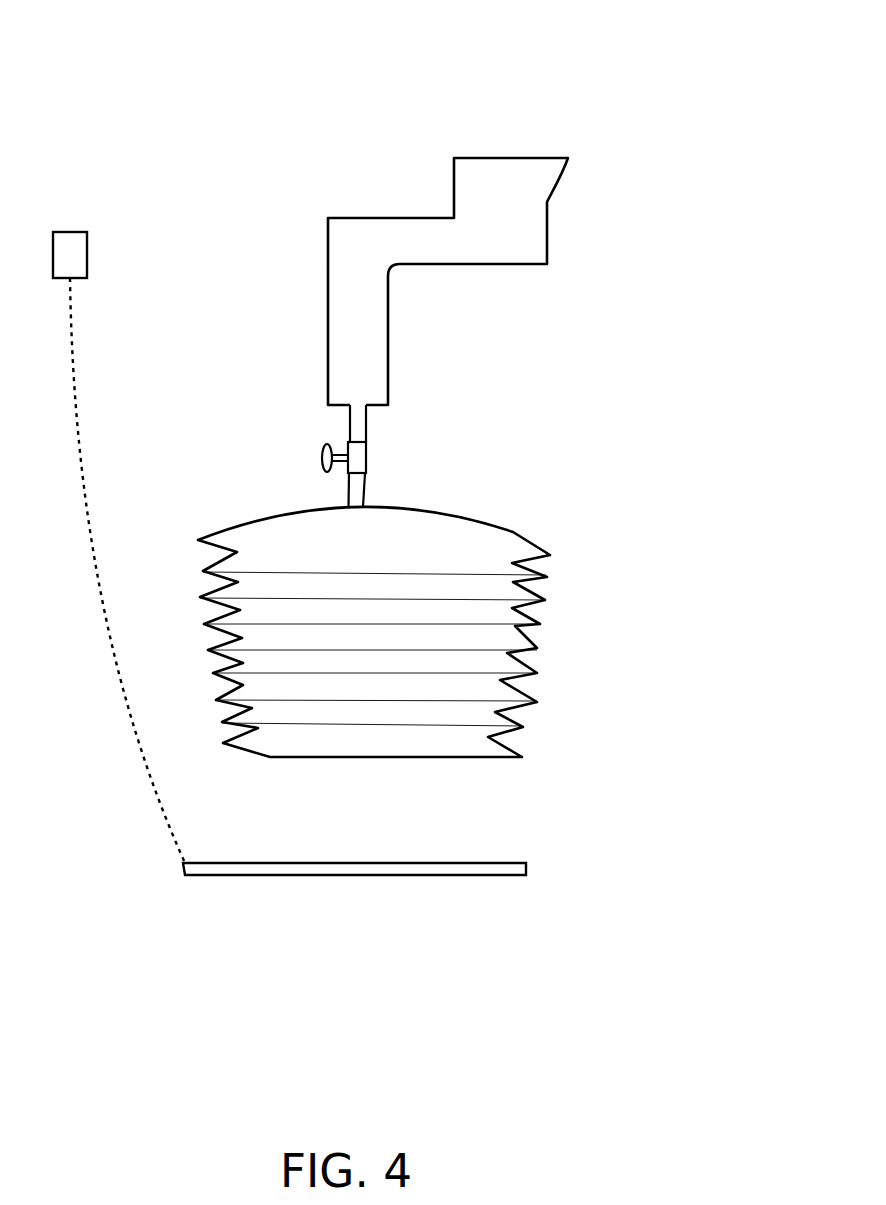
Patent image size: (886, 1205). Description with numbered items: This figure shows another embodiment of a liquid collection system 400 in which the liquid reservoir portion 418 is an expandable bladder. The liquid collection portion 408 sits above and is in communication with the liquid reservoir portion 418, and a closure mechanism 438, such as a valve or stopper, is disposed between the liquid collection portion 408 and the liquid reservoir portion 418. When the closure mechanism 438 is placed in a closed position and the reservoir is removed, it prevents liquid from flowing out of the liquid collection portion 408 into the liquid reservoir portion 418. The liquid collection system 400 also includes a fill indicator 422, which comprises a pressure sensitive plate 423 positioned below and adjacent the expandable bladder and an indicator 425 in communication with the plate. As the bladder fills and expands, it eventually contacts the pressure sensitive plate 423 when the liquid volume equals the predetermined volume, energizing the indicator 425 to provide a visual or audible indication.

The liquid collection system 400 is at (50, 30).
The liquid collection portion 408 is at (328, 270).
The liquid reservoir portion 418 is at (261, 519).
The fill indicator 422 is at (110, 627).
The pressure sensitive plate 423 is at (425, 872).
The indicator 425 is at (53, 254).
The closure mechanism 438 is at (357, 455).